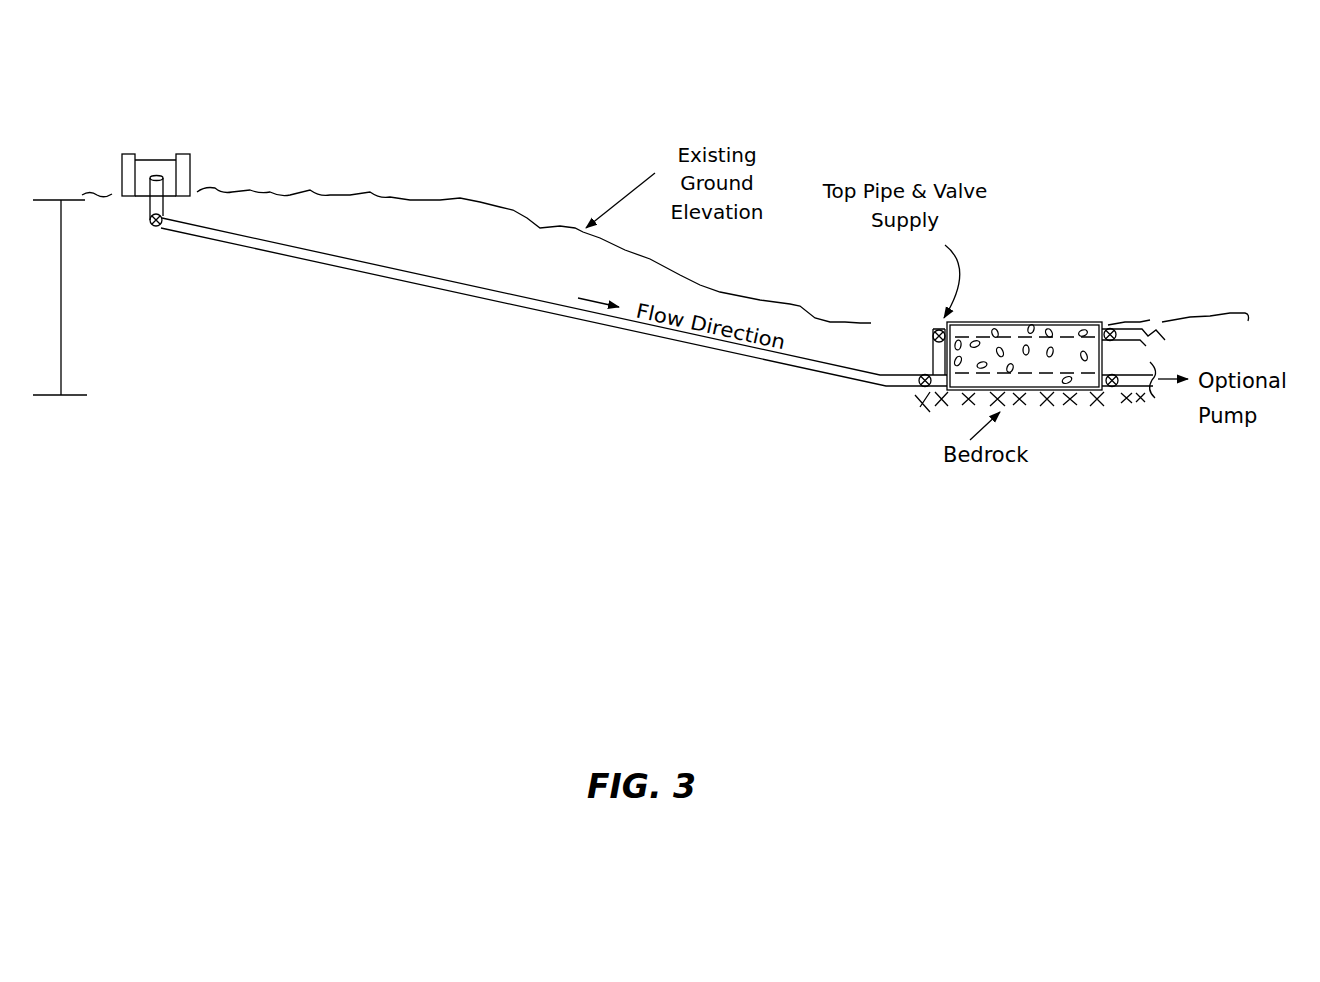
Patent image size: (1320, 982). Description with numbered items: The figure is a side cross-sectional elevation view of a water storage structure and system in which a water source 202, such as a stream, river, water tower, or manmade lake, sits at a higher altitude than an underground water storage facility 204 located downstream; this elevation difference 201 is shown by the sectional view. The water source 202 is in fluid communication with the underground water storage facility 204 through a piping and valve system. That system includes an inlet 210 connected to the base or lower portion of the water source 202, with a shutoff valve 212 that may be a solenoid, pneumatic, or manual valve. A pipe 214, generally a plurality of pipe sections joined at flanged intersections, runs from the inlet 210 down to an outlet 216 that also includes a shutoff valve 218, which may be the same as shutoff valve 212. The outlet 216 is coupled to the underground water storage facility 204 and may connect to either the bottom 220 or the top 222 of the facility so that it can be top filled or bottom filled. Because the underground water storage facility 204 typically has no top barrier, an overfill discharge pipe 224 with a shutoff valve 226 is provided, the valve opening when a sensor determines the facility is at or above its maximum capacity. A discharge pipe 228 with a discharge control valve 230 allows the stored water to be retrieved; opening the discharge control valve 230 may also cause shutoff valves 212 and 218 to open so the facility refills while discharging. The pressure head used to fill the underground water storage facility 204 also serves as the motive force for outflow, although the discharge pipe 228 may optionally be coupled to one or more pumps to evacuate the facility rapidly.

The elevation difference 201 is at (61, 340).
The water source 202 is at (155, 160).
The underground water storage facility 204 is at (992, 389).
The inlet 210 is at (192, 196).
The shutoff valve 212 is at (156, 236).
The pipe 214 is at (358, 251).
The outlet 216 is at (930, 387).
The shutoff valve 218 is at (921, 370).
The bottom 220 is at (965, 378).
The top 222 is at (1008, 333).
The overfill discharge pipe 224 is at (1133, 281).
The shutoff valve 226 is at (1108, 330).
The discharge pipe 228 is at (1117, 388).
The discharge control valve 230 is at (1094, 454).